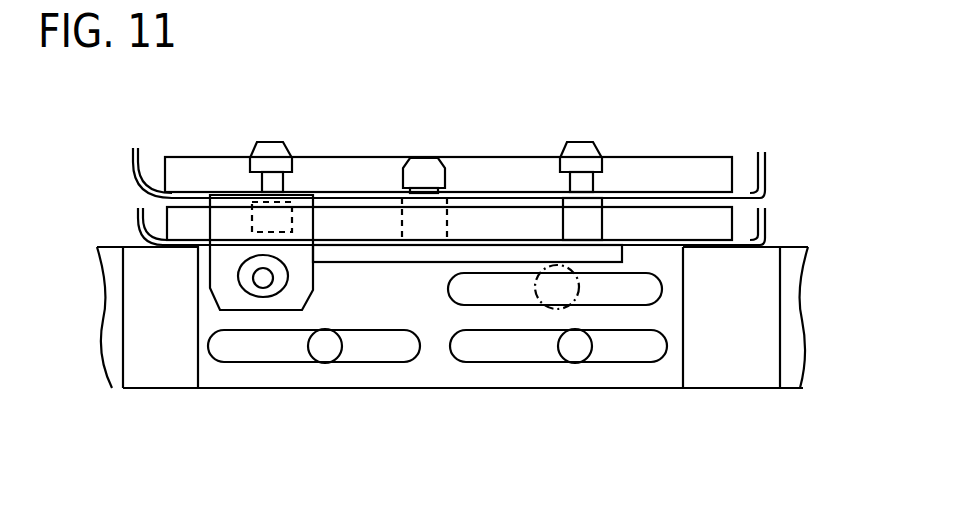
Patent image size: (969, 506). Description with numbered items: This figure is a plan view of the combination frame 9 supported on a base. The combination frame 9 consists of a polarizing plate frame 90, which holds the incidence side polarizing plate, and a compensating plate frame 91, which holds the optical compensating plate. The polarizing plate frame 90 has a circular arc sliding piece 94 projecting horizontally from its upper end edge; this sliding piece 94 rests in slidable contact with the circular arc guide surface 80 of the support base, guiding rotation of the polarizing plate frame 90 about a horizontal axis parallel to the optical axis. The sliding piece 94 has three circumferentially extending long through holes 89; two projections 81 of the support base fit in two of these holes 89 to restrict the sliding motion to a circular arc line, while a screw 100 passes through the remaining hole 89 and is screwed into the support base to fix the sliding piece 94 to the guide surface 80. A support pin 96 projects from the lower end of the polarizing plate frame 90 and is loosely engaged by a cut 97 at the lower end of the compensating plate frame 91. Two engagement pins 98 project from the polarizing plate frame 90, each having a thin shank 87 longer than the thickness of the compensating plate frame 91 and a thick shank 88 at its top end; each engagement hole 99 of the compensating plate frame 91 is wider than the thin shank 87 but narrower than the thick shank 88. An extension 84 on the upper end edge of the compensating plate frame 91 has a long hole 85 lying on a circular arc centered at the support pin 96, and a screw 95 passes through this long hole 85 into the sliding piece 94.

The combination frame 9 is at (520, 207).
The circular arc guide surface 80 is at (803, 350).
The projection 81 is at (323, 355).
The extension 84 is at (220, 267).
The long hole 85 is at (242, 285).
The thin shank 87 is at (262, 178).
The thick shank 88 is at (255, 158).
The long through hole 89 is at (262, 355).
The polarizing plate frame 90 is at (500, 229).
The compensating plate frame 91 is at (765, 166).
The circular arc sliding piece 94 is at (445, 378).
The screw 95 is at (265, 285).
The support pin 96 is at (423, 157).
The cut 97 is at (447, 158).
The engagement pin 98 is at (419, 147).
The engagement hole 99 is at (283, 190).
The screw 100 is at (553, 308).